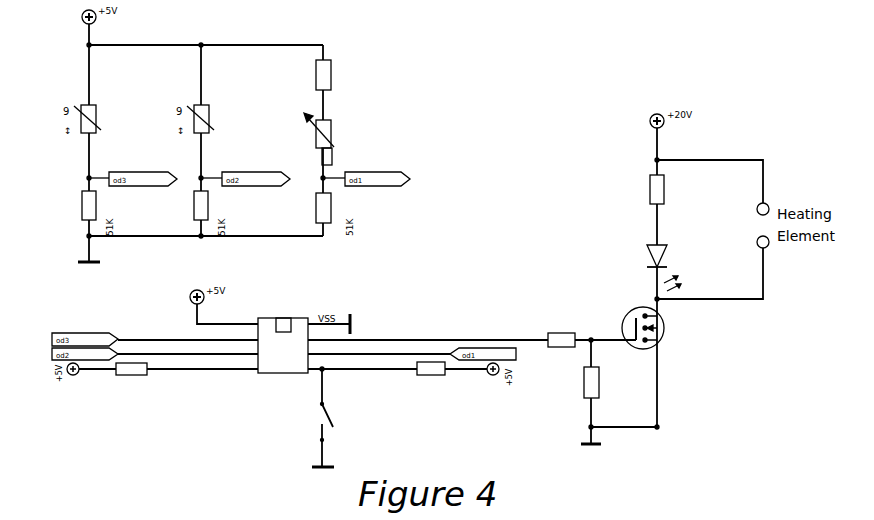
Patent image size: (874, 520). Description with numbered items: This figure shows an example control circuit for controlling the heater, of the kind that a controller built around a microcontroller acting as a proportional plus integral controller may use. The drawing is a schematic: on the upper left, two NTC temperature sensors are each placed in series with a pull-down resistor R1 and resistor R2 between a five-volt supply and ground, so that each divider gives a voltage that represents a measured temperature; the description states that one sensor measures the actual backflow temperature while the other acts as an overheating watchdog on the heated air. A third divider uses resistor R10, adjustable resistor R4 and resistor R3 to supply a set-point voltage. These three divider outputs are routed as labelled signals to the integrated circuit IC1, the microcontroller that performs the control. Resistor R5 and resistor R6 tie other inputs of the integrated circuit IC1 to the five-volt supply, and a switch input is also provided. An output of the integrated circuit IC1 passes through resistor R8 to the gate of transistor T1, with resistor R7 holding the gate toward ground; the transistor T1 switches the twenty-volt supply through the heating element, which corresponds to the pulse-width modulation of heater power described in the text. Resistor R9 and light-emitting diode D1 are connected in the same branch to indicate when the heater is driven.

The resistor R1 51K R1 is at (80, 205).
The resistor R2 51K R2 is at (192, 205).
The resistor R3 51K R3 is at (316, 208).
The potentiometer R4 is at (336, 139).
The resistor R5 is at (118, 374).
The resistor R6 is at (418, 373).
The resistor R7 is at (585, 392).
The resistor R8 is at (556, 334).
The resistor R9 is at (650, 195).
The resistor R10 is at (316, 75).
The light emitting diode D1 is at (668, 268).
The MOSFET transistor T1 is at (634, 361).
The integrated circuit IC1 is at (283, 338).